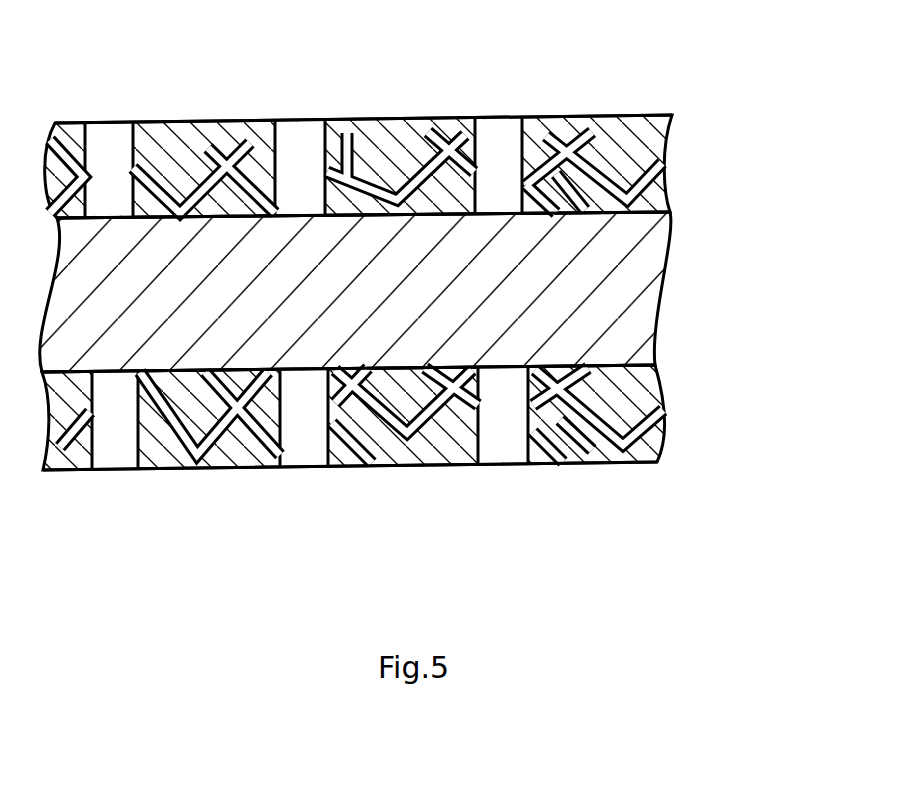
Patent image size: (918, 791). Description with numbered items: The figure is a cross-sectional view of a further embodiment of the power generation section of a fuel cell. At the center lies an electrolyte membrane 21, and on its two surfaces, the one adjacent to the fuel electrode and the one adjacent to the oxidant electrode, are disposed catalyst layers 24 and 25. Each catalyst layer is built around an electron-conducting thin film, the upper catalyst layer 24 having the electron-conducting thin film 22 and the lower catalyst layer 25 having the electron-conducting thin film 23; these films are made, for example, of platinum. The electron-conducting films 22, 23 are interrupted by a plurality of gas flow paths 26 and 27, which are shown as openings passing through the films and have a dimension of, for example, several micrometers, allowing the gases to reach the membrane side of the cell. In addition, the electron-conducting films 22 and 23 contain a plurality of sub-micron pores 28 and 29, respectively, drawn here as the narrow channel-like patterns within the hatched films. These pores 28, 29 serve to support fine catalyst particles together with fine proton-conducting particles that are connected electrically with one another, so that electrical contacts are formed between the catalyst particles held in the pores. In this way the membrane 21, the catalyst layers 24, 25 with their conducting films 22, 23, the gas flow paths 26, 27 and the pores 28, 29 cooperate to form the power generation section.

The electrolyte membrane 21 is at (637, 281).
The electron-conducting thin film 22 is at (620, 140).
The electron-conducting thin film 23 is at (585, 448).
The catalyst layer 24 is at (375, 109).
The catalyst layer 25 is at (368, 471).
The gas flow paths 26 is at (110, 150).
The gas flow paths 27 is at (113, 447).
The sub-micron pores 28 is at (212, 147).
The sub-micron pores 29 is at (205, 447).